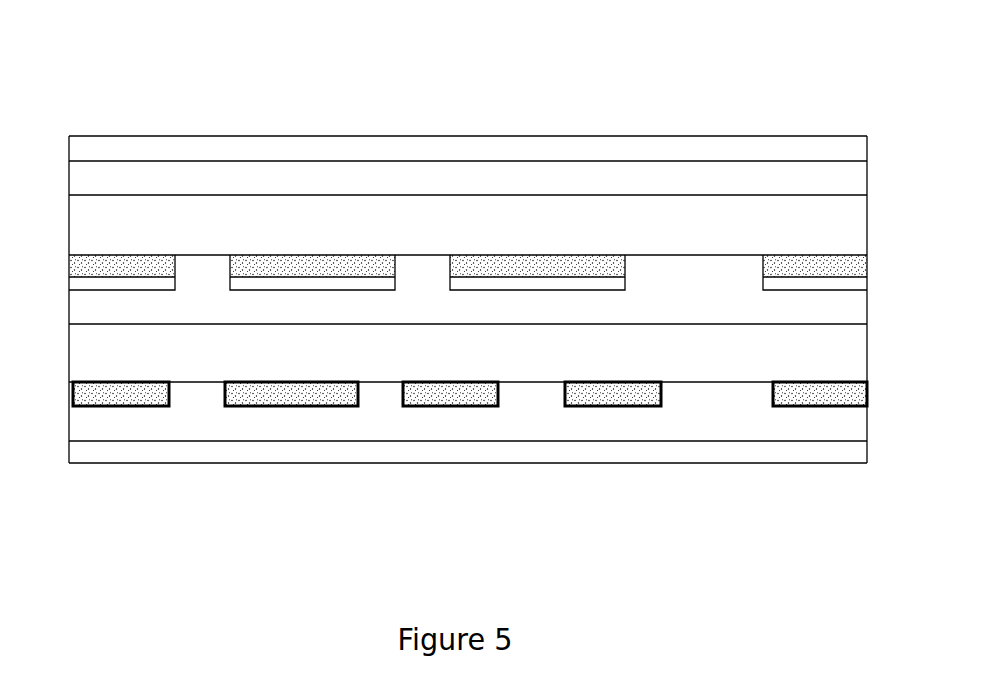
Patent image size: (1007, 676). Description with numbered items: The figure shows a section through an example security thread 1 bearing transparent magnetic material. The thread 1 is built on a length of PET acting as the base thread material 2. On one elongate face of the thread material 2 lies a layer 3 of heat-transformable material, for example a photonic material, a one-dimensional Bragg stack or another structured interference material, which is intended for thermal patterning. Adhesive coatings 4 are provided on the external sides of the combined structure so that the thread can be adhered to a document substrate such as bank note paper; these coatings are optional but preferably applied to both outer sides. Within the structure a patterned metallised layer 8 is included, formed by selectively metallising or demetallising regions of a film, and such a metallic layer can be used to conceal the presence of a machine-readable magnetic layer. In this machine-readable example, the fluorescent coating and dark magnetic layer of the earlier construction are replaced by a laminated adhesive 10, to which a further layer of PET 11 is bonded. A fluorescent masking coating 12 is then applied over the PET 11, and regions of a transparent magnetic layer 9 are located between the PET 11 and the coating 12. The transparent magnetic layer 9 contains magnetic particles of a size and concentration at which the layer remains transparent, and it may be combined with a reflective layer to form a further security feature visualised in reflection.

The thread 1 is at (160, 87).
The base thread material 2 is at (534, 214).
The layer of heat-transformable material 3 is at (320, 167).
The adhesive coatings 4 is at (775, 447).
The patterned metallised layer 8 is at (493, 268).
The transparent magnetic layer 9 is at (237, 402).
The laminated adhesive 10 is at (675, 305).
The PET 11 is at (718, 356).
The fluorescent masking coating 12 is at (508, 416).